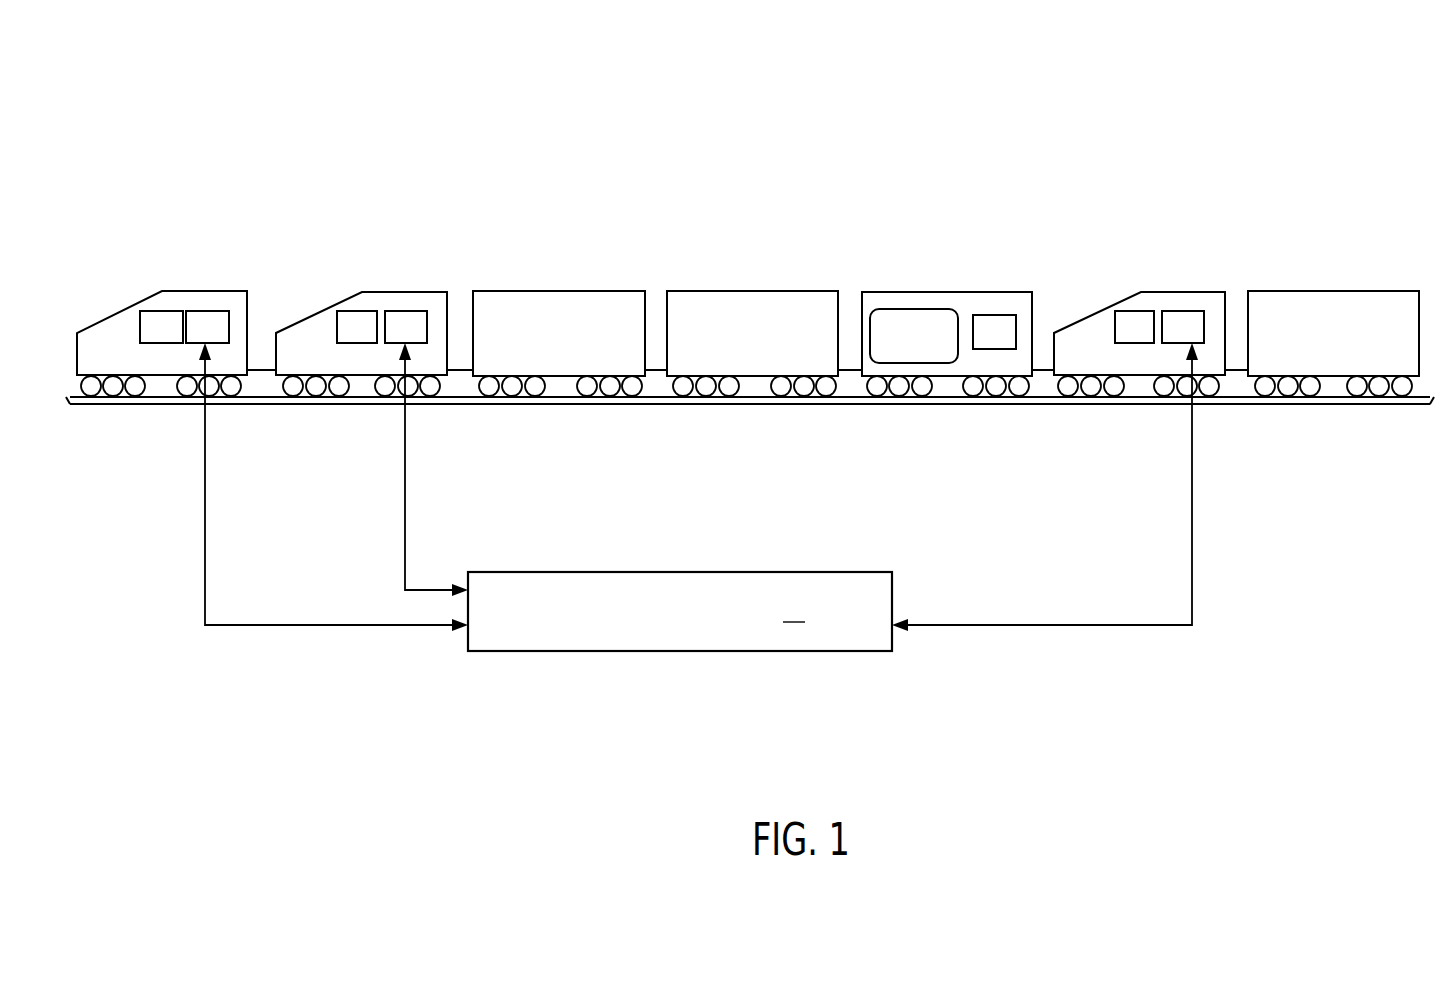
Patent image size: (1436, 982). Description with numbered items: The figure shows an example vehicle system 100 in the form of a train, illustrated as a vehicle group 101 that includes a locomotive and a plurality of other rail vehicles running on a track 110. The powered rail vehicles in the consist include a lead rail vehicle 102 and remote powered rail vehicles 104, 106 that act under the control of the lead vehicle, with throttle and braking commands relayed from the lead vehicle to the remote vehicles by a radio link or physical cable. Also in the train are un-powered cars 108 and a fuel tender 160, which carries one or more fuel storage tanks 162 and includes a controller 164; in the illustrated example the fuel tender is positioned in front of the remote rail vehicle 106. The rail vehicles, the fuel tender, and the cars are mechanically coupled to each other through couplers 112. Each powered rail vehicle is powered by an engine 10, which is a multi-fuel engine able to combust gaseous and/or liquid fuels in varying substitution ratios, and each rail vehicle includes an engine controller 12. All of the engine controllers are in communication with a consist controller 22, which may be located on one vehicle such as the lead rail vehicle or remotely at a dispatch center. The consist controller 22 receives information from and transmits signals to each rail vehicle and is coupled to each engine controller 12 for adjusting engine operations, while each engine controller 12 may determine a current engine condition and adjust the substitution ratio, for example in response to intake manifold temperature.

The vehicle system 100 is at (1192, 90).
The vehicle group 101 is at (268, 238).
The lead rail vehicle 102 is at (183, 290).
The remote powered rail vehicle 104 is at (395, 290).
The remote powered rail vehicle 106 is at (1153, 290).
The cars 108 is at (555, 289).
The track 110 is at (1362, 406).
The couplers 112 is at (258, 373).
The fuel tender 160 is at (923, 290).
The fuel storage tanks 162 is at (930, 346).
The controller 164 is at (1010, 343).
The engine 10 is at (172, 340).
The engine controller 12 is at (218, 340).
The consist controller 22 is at (680, 611).